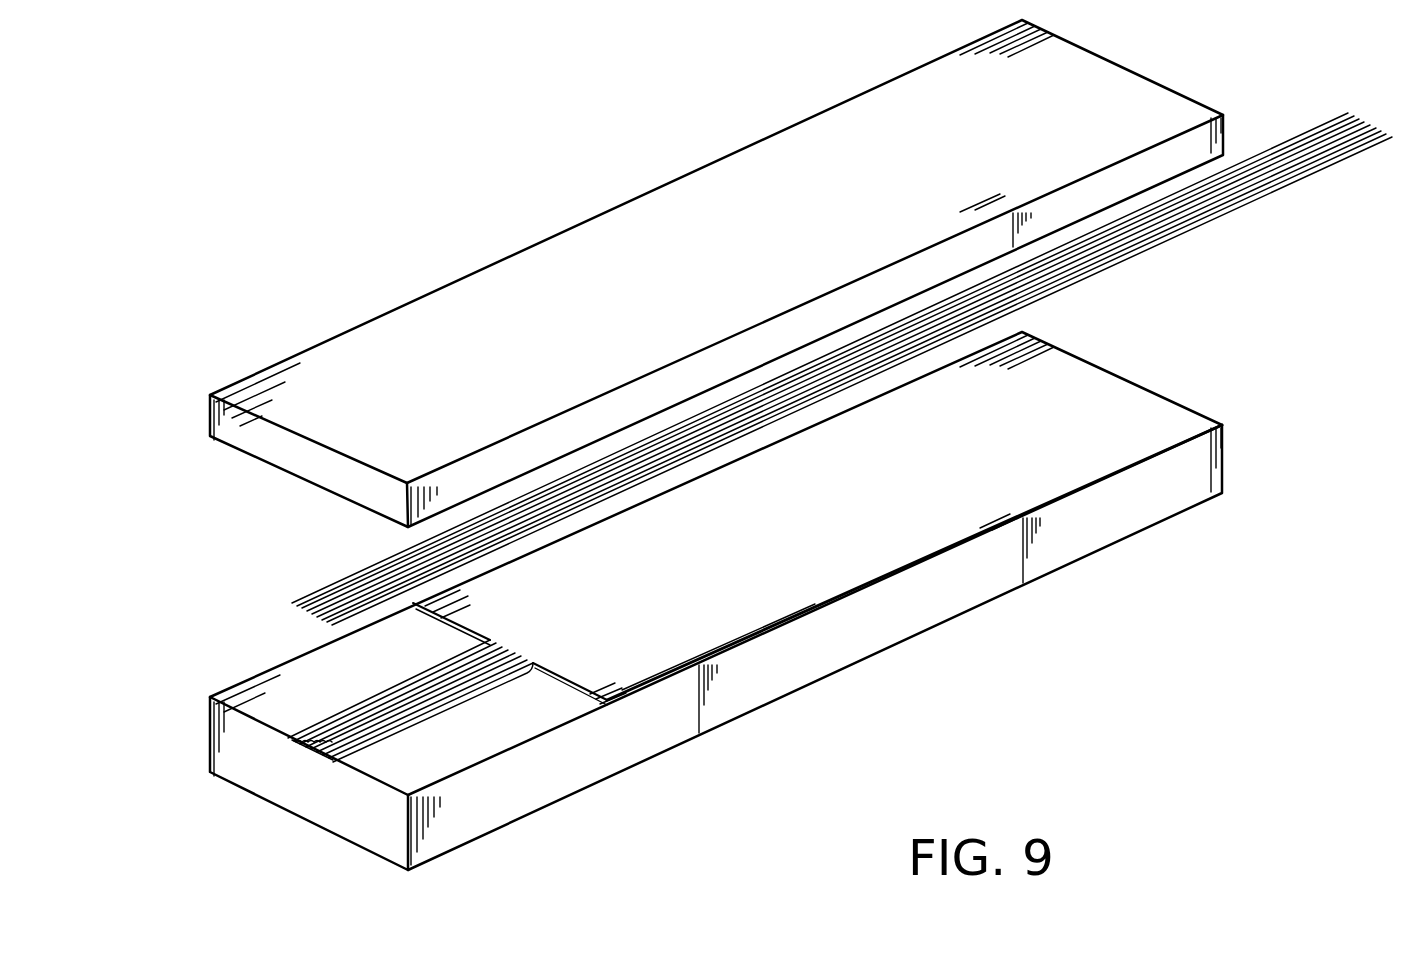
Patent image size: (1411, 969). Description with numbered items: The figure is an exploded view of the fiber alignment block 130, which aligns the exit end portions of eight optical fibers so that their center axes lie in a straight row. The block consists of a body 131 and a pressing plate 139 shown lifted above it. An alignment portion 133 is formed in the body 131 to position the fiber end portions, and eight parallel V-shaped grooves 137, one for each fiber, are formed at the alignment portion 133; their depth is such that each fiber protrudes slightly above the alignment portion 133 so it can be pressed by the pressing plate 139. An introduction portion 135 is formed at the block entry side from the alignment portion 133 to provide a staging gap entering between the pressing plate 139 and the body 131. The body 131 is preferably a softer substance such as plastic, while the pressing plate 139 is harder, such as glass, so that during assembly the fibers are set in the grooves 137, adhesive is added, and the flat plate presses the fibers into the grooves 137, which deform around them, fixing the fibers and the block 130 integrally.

The fiber alignment block 130 is at (758, 445).
The body 131 is at (1150, 381).
The alignment portion 133 is at (436, 715).
The introduction portion 135 is at (748, 632).
The V-shaped grooves 137 is at (333, 762).
The pressing plate 139 is at (735, 176).